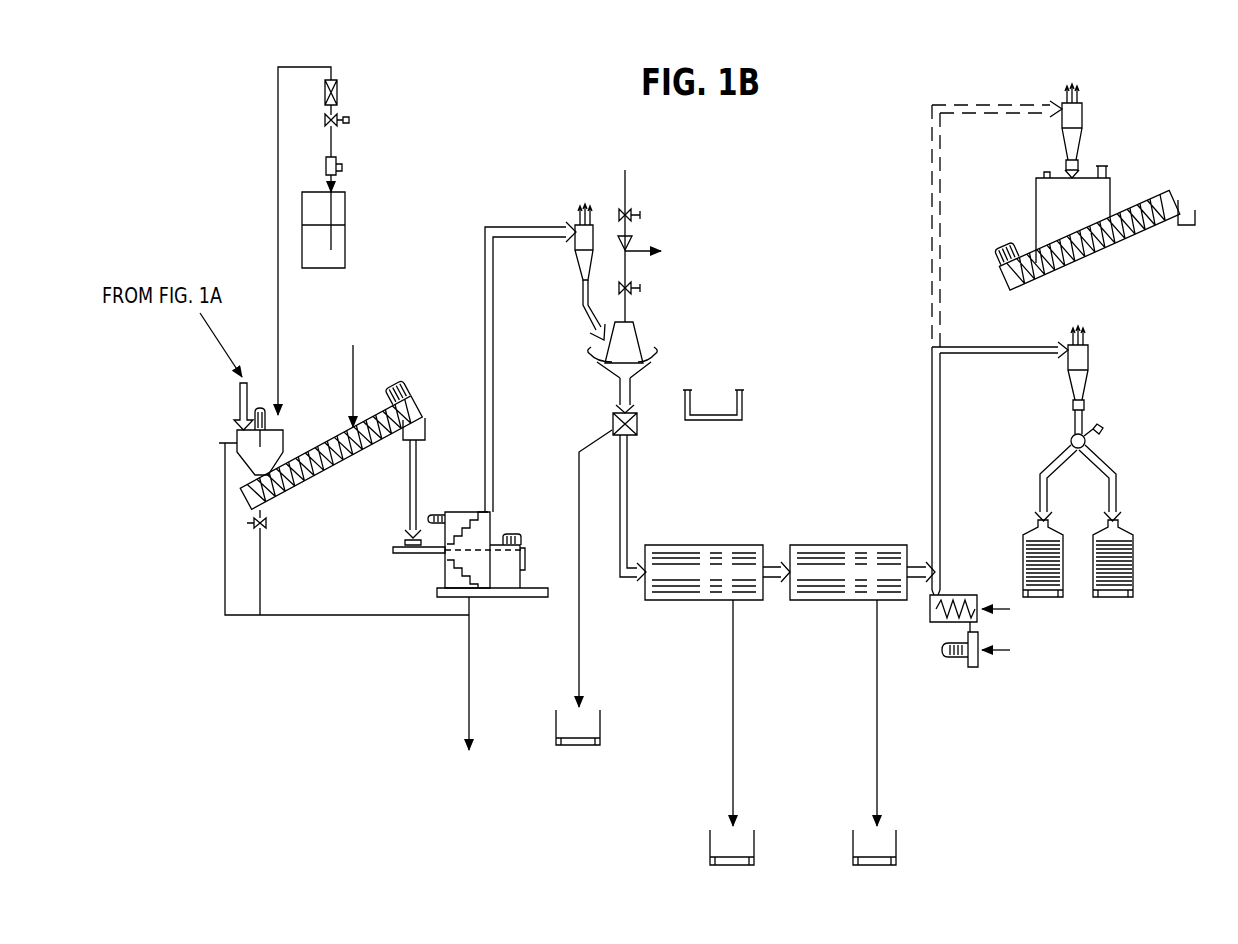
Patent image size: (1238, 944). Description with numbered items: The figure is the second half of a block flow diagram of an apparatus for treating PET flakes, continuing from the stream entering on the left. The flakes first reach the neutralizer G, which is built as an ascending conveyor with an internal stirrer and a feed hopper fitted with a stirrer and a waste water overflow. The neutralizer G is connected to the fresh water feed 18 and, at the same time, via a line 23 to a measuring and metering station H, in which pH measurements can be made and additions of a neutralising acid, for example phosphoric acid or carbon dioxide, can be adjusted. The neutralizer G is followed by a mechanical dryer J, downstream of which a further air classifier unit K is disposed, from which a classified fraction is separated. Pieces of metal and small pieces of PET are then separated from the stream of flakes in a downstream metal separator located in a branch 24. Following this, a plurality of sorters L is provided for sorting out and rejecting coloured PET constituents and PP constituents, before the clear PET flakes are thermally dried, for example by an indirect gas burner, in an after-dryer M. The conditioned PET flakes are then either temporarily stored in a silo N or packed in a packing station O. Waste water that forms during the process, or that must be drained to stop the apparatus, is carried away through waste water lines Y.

The fresh water feed 18 is at (353, 357).
The line 23 is at (278, 325).
The branch 24 is at (627, 486).
The neutralizer G is at (339, 487).
The measuring and metering station H is at (357, 223).
The mechanical dryer J is at (509, 503).
The air classifier unit K is at (583, 352).
The sorters L is at (831, 528).
The after-dryer M is at (960, 579).
The silo N is at (1131, 183).
The packing station O is at (1122, 451).
The waste water lines Y is at (469, 667).